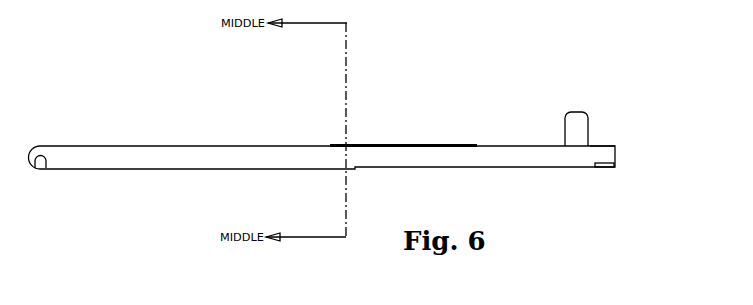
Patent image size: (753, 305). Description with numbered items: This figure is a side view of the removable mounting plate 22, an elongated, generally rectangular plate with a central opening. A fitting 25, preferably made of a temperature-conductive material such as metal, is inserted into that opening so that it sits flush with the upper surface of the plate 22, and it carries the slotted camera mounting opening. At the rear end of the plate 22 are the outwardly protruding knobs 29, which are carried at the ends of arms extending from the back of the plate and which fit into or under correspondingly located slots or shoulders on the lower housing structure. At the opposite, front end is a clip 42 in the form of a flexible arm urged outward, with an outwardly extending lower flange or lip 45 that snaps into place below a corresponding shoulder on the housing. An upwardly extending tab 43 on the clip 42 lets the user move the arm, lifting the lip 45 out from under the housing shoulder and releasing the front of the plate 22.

The plate 22 is at (505, 145).
The fitting 25 is at (403, 146).
The knob 29 is at (40, 169).
The clip 42 is at (553, 153).
The tab 43 is at (579, 126).
The lower flange or lip 45 is at (606, 168).